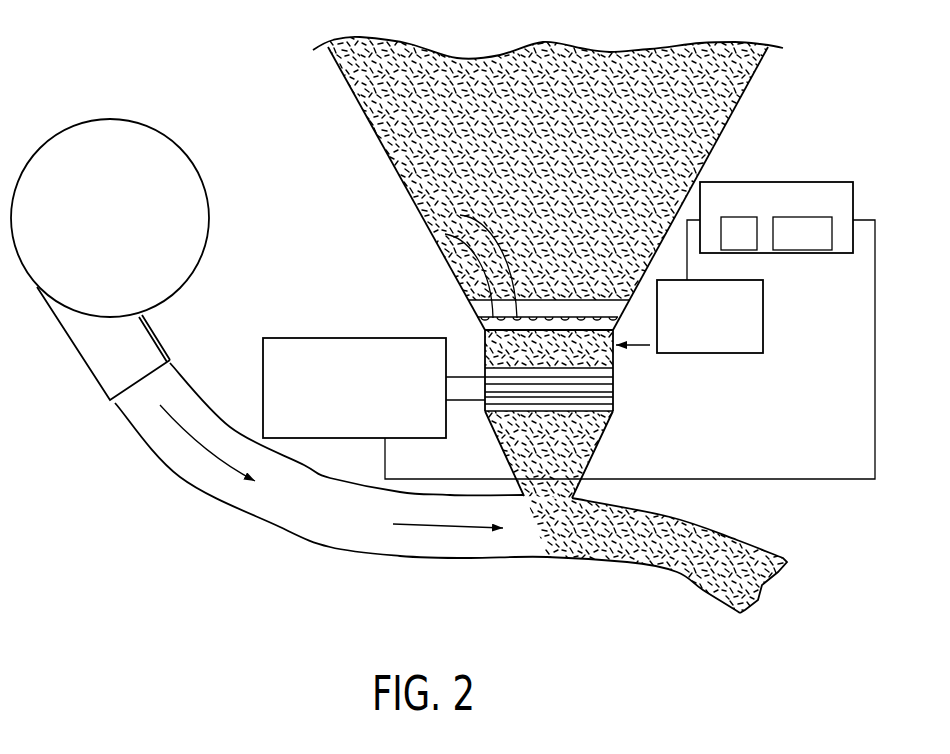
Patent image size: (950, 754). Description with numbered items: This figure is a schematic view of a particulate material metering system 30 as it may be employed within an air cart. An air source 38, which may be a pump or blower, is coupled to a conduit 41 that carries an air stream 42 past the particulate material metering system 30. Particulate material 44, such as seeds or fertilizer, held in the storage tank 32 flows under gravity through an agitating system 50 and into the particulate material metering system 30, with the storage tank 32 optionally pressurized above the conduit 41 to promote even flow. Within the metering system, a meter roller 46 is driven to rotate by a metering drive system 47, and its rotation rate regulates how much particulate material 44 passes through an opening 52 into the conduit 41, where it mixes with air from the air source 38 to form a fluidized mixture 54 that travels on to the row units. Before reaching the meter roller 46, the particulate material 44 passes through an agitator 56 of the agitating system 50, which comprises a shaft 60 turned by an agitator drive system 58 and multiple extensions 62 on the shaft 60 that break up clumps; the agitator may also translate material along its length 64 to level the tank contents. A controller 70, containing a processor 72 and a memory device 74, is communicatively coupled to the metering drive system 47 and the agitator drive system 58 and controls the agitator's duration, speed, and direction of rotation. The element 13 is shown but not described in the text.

The material delivery system 13 is at (793, 372).
The particulate material metering system 30 is at (617, 404).
The storage tank 32 is at (351, 89).
The air source 38 is at (108, 119).
The conduit 41 is at (283, 527).
The air stream 42 is at (198, 447).
The particulate material 44 is at (741, 95).
The meter roller 46 is at (575, 408).
The metering drive system 47 is at (350, 338).
The agitating system 50 is at (777, 302).
The opening 52 is at (556, 500).
The fluidized mixture 54 is at (677, 567).
The agitator 56 is at (469, 316).
The agitator drive system 58 is at (763, 318).
The shaft 60 is at (445, 234).
The extensions 62 is at (460, 215).
The length 64 is at (479, 344).
The controller 70 is at (778, 182).
The processor 72 is at (738, 253).
The memory device 74 is at (800, 253).